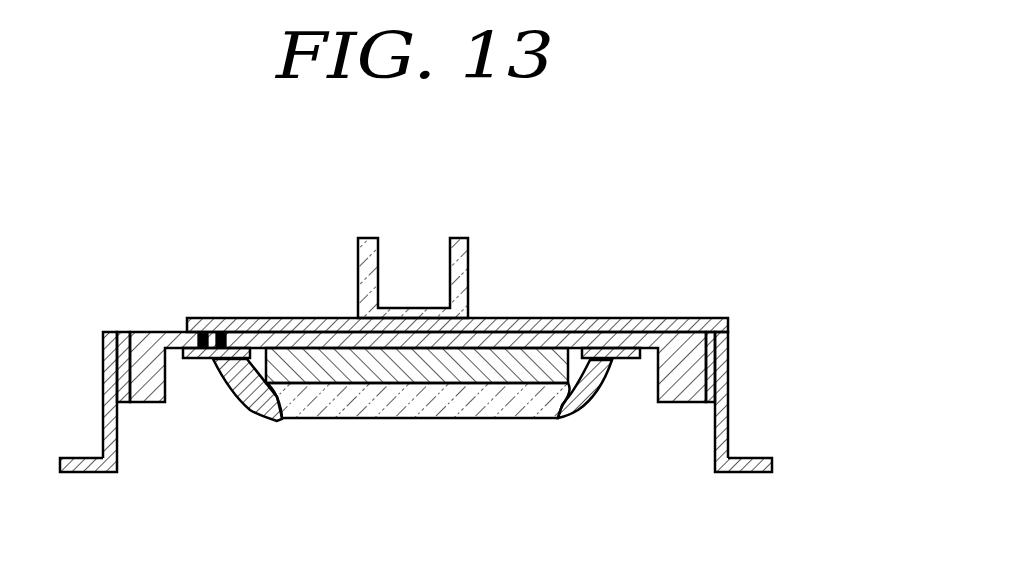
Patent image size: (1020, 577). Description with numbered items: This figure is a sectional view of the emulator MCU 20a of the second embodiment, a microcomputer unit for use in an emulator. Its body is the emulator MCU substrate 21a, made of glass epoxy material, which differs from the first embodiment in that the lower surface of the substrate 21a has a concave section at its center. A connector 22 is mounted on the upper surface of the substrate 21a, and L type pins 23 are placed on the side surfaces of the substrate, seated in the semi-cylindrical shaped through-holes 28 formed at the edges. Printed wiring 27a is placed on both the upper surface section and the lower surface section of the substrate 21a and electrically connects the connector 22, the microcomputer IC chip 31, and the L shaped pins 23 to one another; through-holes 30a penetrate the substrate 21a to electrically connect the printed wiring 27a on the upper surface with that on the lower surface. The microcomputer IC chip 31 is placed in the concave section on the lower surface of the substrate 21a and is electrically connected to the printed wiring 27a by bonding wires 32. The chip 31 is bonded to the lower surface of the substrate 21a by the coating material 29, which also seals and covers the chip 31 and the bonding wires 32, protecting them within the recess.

The emulator MCU 20a is at (643, 226).
The emulator MCU substrate 21a is at (684, 373).
The connector 22 is at (368, 237).
The L type pins 23 is at (86, 473).
The printed wiring 27a is at (285, 318).
The semi-cylindrical shaped through-holes 28 is at (122, 331).
The coating material 29 is at (418, 420).
The through-holes 30a is at (183, 333).
The microcomputer IC chip 31 is at (463, 384).
The bonding wires 32 is at (278, 421).